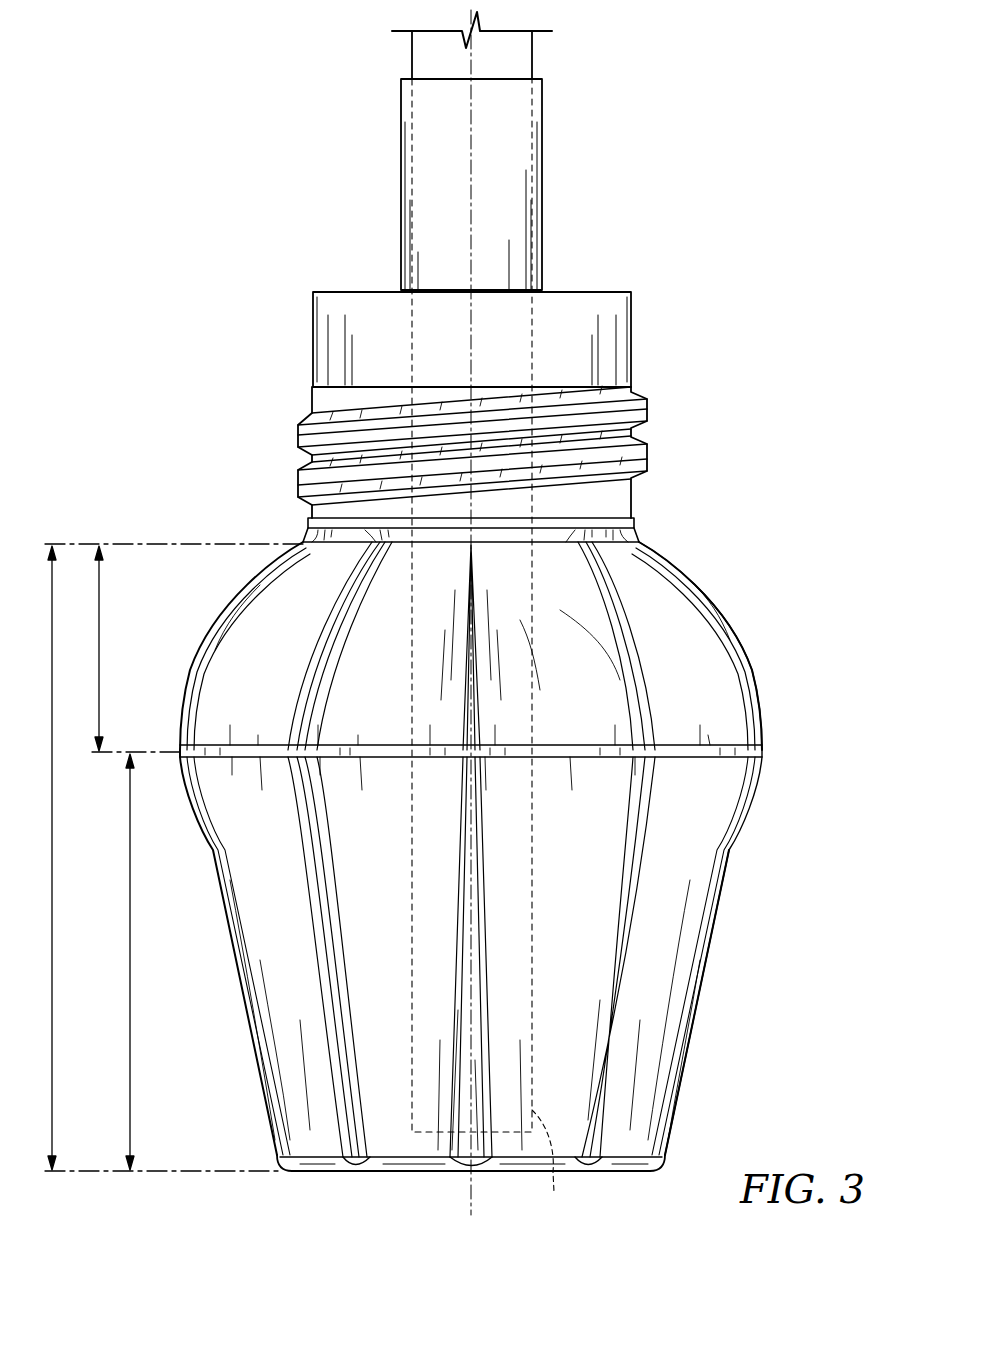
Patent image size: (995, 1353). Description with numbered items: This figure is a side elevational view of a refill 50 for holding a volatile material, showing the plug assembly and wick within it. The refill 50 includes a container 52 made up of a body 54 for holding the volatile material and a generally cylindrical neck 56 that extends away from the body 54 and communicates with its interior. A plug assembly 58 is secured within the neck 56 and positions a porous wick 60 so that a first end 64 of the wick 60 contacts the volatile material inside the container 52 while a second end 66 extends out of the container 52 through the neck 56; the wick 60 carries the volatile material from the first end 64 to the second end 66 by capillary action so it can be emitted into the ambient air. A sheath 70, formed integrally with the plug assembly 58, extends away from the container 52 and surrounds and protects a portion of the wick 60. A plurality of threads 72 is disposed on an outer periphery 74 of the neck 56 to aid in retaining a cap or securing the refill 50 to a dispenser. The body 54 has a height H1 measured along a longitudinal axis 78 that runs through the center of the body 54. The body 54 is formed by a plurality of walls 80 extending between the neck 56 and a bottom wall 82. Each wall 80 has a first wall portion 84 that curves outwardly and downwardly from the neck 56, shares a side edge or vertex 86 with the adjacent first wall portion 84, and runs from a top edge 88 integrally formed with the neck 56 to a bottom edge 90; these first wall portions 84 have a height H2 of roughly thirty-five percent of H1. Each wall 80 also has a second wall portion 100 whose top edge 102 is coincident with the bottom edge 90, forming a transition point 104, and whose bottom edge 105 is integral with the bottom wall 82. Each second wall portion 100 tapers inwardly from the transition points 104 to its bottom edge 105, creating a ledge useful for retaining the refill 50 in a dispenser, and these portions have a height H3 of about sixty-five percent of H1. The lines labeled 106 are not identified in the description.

The refill 50 is at (768, 406).
The container 52 is at (757, 678).
The body 54 is at (712, 928).
The neck 56 is at (650, 432).
The plug assembly 58 is at (632, 336).
The porous wick 60 is at (536, 56).
The first end 64 is at (552, 1160).
The second end 66 is at (412, 40).
The sheath 70 is at (542, 180).
The threads 72 is at (650, 464).
The outer periphery 74 is at (299, 462).
The longitudinal axis 78 is at (470, 1198).
The wall 80 is at (222, 740).
The bottom wall 82 is at (374, 1172).
The first wall portion 84 is at (263, 592).
The vertex 86 is at (205, 622).
The top edge 88 is at (305, 540).
The bottom edge 90 is at (260, 744).
The second wall portion 100 is at (685, 964).
The top edge 102 is at (256, 760).
The transition point 104 is at (430, 744).
The bottom edge 105 is at (306, 1172).
The lower body line 106 is at (640, 808).
The height H1 is at (171, 857).
The height H2 is at (134, 649).
The height H3 is at (130, 962).